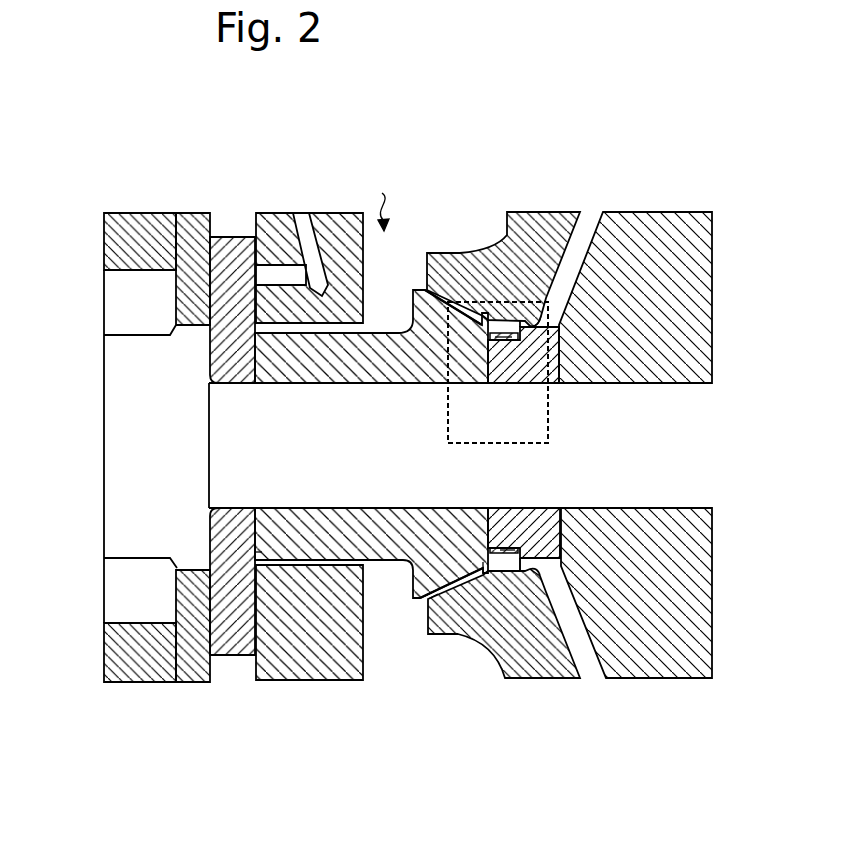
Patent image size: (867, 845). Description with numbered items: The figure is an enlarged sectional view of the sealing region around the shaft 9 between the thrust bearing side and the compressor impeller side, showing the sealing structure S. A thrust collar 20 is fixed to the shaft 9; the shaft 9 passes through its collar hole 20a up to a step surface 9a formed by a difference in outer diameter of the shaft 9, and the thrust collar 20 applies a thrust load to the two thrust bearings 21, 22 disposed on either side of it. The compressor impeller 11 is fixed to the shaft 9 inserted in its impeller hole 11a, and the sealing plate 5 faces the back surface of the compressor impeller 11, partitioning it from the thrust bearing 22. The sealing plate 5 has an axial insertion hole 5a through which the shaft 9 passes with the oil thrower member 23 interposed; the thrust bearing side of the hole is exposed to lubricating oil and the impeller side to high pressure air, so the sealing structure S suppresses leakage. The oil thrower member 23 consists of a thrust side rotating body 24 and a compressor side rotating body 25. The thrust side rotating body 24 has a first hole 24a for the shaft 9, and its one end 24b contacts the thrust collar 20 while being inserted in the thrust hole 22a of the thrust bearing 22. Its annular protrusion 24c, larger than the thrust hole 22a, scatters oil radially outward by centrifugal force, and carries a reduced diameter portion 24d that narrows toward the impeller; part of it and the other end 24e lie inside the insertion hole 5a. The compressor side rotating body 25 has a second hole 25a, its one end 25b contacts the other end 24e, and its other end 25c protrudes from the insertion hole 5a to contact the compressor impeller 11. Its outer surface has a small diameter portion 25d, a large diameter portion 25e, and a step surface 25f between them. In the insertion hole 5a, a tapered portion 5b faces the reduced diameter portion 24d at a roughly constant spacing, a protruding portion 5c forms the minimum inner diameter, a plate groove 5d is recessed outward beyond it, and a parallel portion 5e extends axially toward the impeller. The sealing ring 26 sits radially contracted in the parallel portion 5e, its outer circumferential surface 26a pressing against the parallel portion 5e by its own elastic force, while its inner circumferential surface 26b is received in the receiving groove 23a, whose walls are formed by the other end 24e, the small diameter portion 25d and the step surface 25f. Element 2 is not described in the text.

The base block 2 is at (163, 213).
The sealing plate 5 is at (553, 212).
The insertion hole 5a is at (541, 564).
The tapered portion 5b is at (437, 582).
The protruding portion 5c is at (510, 571).
The plate groove 5d is at (513, 570).
The parallel portion 5e is at (546, 329).
The shaft 9 is at (400, 481).
The step surface 9a is at (213, 536).
The compressor impeller 11 is at (683, 212).
The impeller hole 11a is at (560, 372).
The thrust collar 20 is at (227, 237).
The collar hole 20a is at (208, 390).
The thrust bearing 21 is at (192, 213).
The thrust bearing 22 is at (327, 213).
The thrust hole 22a is at (262, 385).
The oil thrower member 23 is at (410, 429).
The receiving groove 23a is at (485, 508).
The thrust side rotating body 24 is at (413, 290).
The first hole 24a is at (286, 385).
The one end 24b is at (258, 552).
The annular protrusion 24c is at (430, 600).
The reduced diameter portion 24d is at (481, 574).
The other end 24e is at (498, 385).
The compressor side rotating body 25 is at (510, 327).
The second hole 25a is at (536, 384).
The one end 25b is at (485, 507).
The other end 25c is at (664, 385).
The small diameter portion 25d is at (515, 568).
The large diameter portion 25e is at (561, 566).
The step surface 25f is at (521, 568).
The sealing ring 26 is at (520, 551).
The outer circumferential surface 26a is at (512, 571).
The inner circumferential surface 26b is at (512, 340).
The sealing structure S is at (390, 190).